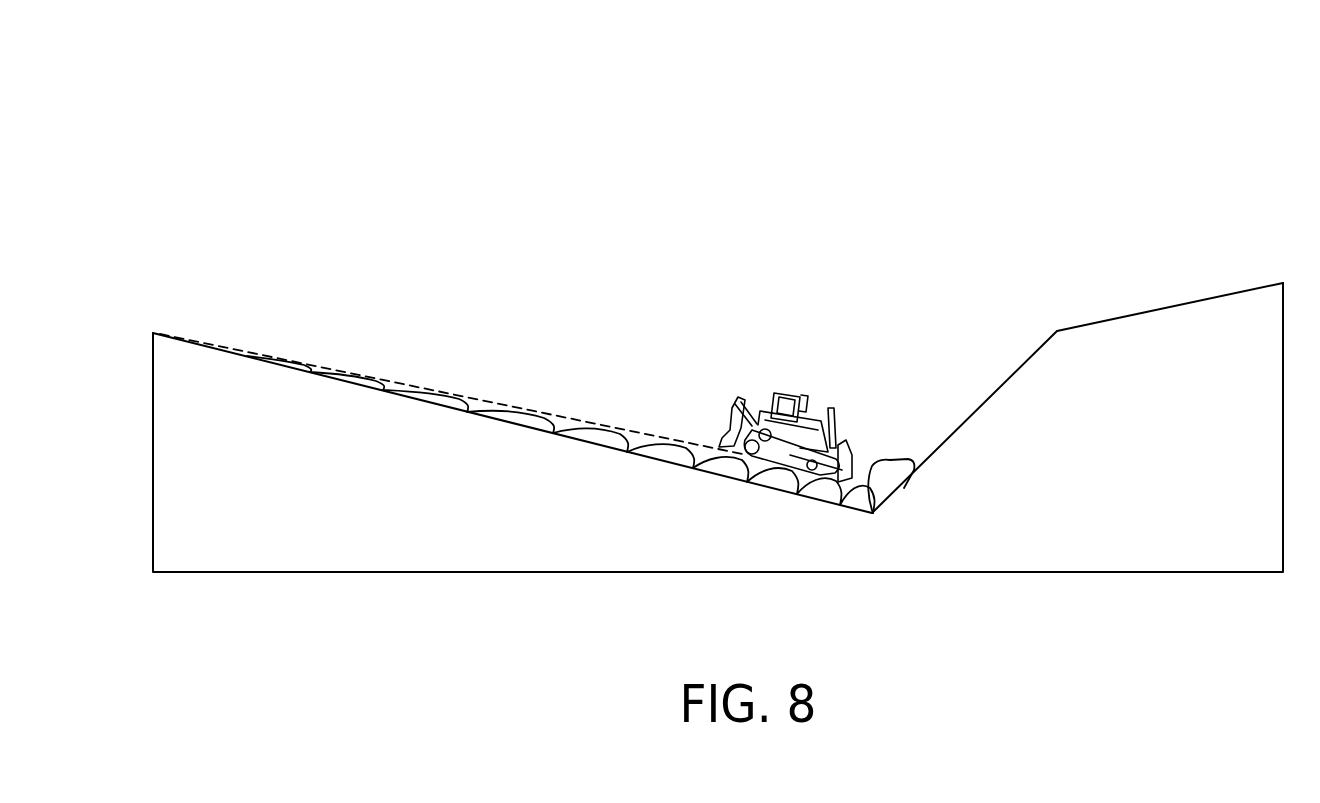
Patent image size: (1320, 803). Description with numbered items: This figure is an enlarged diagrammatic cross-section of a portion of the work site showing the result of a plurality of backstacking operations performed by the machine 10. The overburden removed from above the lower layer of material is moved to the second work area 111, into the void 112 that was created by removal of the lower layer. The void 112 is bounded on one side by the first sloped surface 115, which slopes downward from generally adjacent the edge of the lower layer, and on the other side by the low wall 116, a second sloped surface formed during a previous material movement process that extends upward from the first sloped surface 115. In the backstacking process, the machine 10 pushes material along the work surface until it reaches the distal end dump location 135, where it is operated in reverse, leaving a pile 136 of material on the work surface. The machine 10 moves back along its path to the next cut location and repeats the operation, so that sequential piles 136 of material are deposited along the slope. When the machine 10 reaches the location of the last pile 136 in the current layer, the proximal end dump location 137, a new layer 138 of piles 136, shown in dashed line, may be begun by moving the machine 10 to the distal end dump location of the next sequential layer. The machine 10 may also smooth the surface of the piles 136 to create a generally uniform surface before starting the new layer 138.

The machine 10 is at (788, 372).
The second work area 111 is at (855, 223).
The void 112 is at (972, 141).
The first sloped surface 115 is at (233, 347).
The low wall 116 is at (992, 390).
The distal end dump location 135 is at (875, 488).
The pile 136 is at (587, 430).
The proximal end dump location 137 is at (313, 365).
The new layer 138 is at (483, 402).